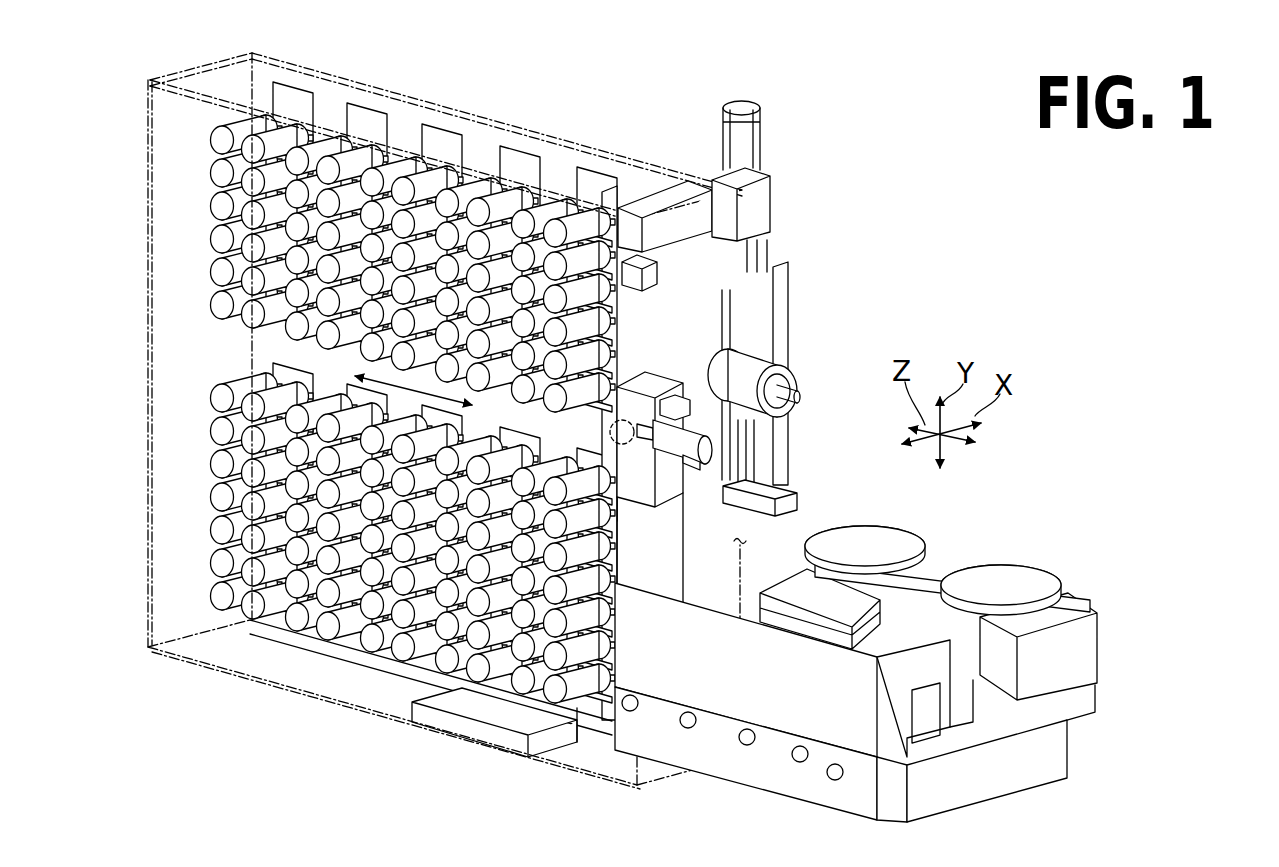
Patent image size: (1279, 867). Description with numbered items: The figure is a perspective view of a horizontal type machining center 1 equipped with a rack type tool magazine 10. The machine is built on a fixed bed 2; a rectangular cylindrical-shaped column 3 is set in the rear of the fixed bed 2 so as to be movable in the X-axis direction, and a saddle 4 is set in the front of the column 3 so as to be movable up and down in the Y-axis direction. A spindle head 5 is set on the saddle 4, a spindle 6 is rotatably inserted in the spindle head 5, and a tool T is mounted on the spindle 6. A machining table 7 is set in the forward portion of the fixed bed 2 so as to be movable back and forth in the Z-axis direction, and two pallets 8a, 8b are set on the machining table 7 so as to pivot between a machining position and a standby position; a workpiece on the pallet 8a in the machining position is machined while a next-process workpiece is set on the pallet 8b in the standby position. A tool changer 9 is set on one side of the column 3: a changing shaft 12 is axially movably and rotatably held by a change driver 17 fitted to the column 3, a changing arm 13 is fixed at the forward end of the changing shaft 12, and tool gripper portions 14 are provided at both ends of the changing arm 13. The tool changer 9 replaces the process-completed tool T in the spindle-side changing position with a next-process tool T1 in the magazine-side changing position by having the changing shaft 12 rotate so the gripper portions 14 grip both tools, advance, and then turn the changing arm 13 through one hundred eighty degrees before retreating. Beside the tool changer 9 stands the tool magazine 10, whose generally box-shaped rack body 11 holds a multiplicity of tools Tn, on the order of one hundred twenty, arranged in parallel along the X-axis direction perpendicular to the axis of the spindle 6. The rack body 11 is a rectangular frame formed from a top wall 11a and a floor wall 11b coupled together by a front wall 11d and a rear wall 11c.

The horizontal type machining center 1 is at (869, 457).
The fixed bed 2 is at (1076, 752).
The column 3 is at (650, 195).
The saddle 4 is at (793, 287).
The spindle head 5 is at (773, 367).
The spindle 6 is at (794, 389).
The machining table 7 is at (847, 640).
The pallet 8a is at (897, 540).
The pallet 8b is at (1013, 572).
The tool changer 9 is at (725, 546).
The tool magazine 10 is at (369, 401).
The rack body 11 is at (427, 440).
The top wall 11a is at (338, 97).
The floor wall 11b is at (320, 678).
The rear wall 11c is at (165, 205).
The front wall 11d is at (650, 765).
The changing shaft 12 is at (700, 428).
The changing arm 13 is at (703, 395).
The tool gripper portions 14 is at (686, 288).
The change driver 17 is at (641, 385).
The tool T is at (795, 396).
The next-process tool T1 is at (627, 422).
The tools Tn is at (205, 319).